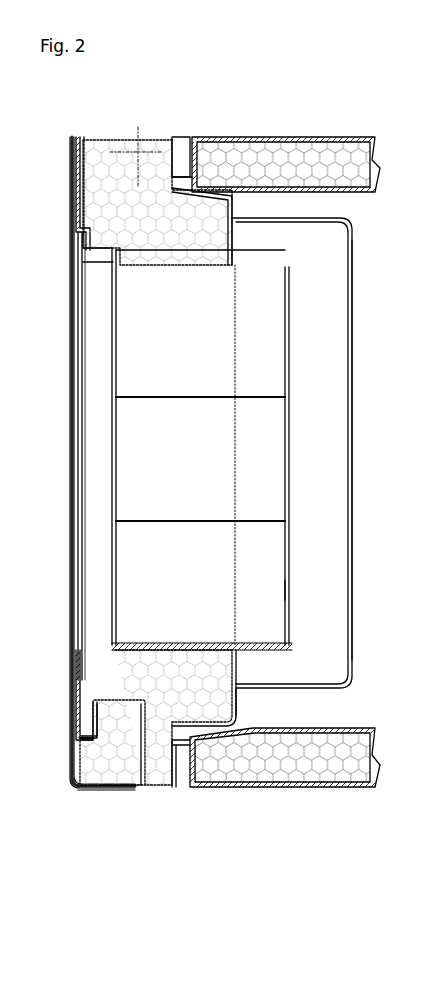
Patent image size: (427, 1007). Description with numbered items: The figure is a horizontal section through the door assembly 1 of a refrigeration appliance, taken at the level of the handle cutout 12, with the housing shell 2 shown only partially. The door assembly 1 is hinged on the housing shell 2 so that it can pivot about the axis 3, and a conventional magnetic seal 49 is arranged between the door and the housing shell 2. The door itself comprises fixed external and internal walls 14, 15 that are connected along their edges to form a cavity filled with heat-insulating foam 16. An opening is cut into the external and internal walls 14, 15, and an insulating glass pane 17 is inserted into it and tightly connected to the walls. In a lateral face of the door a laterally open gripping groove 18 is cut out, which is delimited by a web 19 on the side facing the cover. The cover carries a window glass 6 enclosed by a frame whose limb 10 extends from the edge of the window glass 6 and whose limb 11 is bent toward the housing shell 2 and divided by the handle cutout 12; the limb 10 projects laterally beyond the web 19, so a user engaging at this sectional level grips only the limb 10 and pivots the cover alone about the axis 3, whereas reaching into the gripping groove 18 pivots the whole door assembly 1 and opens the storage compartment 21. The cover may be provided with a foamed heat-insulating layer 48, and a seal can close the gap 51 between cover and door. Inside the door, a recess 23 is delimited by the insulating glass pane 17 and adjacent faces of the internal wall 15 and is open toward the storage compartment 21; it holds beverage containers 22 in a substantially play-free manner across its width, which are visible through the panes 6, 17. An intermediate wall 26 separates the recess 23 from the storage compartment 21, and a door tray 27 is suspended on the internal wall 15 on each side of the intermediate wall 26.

The door assembly 1 is at (82, 870).
The housing shell 2 is at (278, 150).
The axis 3 is at (137, 152).
The window glass 6 is at (72, 328).
The limb 10 is at (70, 730).
The limb 11 is at (82, 788).
The handle cutout 12 is at (108, 745).
The external wall 14 is at (72, 176).
The internal wall 15 is at (236, 233).
The heat-insulating foam 16 is at (165, 244).
The insulating glass pane 17 is at (88, 378).
The gripping groove 18 is at (134, 731).
The web 19 is at (88, 736).
The storage compartment 21 is at (398, 336).
The beverage containers 22 is at (262, 358).
The recess 23 is at (214, 305).
The intermediate wall 26 is at (287, 590).
The door tray 27 is at (350, 652).
The foamed heat-insulating layer 48 is at (72, 206).
The magnetic seal 49 is at (183, 150).
The gap 51 is at (72, 218).